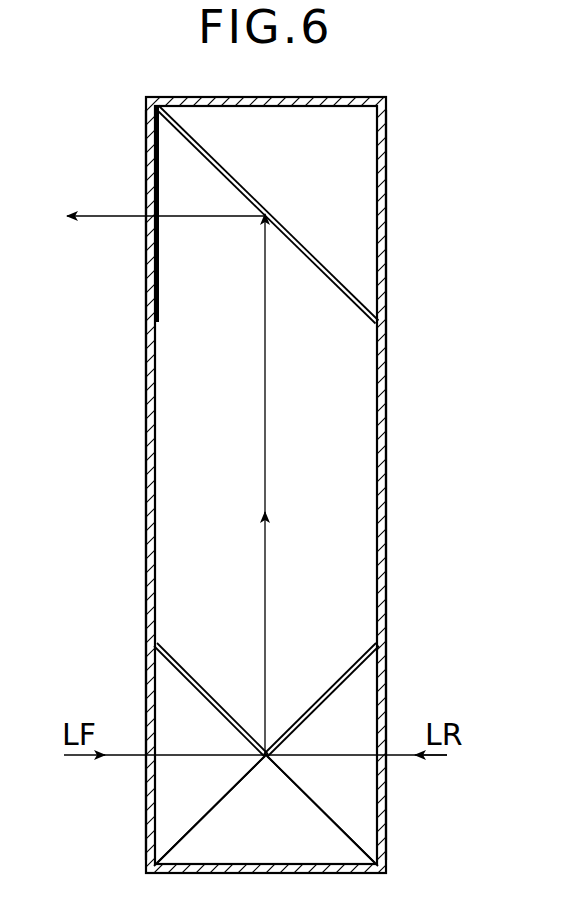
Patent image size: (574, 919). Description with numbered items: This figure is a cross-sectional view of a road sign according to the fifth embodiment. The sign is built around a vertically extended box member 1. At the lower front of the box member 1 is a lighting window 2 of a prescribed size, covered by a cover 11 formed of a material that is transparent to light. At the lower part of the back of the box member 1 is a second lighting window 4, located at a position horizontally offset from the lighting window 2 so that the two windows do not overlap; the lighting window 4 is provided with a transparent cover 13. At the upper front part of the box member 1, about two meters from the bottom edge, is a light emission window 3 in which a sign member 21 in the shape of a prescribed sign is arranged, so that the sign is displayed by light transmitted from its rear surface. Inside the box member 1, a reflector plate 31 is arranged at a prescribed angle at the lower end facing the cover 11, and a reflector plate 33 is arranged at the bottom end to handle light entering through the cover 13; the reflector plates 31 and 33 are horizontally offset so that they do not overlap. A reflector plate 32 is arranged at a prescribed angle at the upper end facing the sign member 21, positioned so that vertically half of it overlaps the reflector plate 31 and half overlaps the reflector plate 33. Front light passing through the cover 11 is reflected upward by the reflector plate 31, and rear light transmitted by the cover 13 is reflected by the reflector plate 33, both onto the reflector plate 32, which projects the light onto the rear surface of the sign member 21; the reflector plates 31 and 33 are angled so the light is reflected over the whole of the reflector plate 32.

The box member 1 is at (356, 100).
The lighting window 2 is at (148, 846).
The light emission window 3 is at (148, 306).
The lighting window 4 is at (382, 846).
The cover 11 is at (147, 667).
The transparent cover 13 is at (380, 671).
The sign member 21 is at (147, 163).
The reflector plate 31 is at (240, 793).
The reflector plate 32 is at (321, 263).
The reflector plate 33 is at (291, 793).